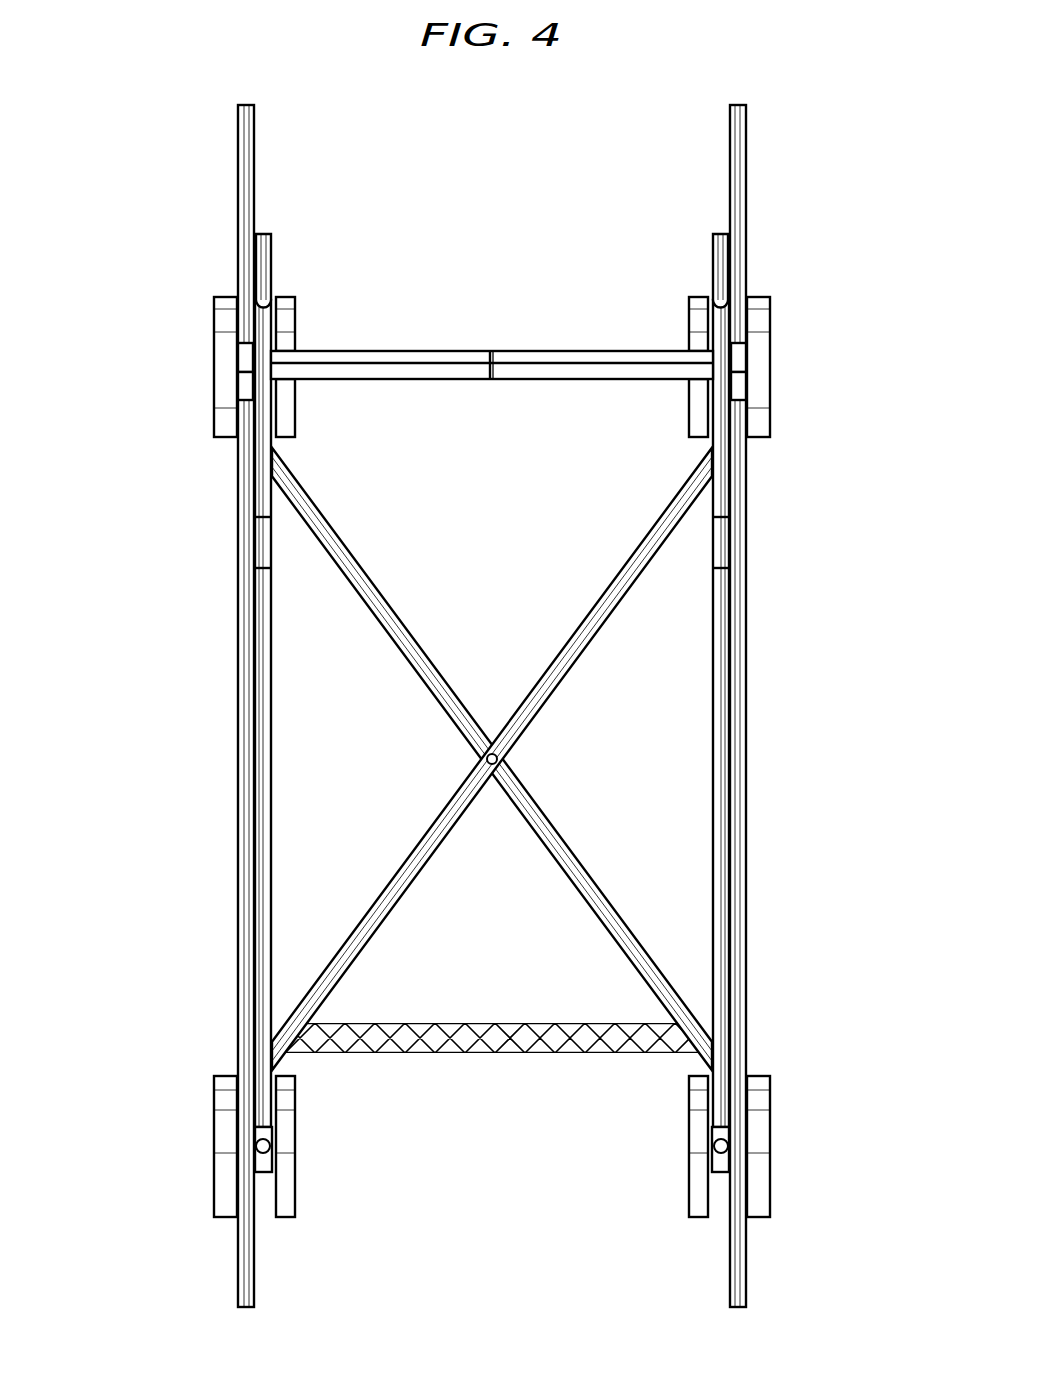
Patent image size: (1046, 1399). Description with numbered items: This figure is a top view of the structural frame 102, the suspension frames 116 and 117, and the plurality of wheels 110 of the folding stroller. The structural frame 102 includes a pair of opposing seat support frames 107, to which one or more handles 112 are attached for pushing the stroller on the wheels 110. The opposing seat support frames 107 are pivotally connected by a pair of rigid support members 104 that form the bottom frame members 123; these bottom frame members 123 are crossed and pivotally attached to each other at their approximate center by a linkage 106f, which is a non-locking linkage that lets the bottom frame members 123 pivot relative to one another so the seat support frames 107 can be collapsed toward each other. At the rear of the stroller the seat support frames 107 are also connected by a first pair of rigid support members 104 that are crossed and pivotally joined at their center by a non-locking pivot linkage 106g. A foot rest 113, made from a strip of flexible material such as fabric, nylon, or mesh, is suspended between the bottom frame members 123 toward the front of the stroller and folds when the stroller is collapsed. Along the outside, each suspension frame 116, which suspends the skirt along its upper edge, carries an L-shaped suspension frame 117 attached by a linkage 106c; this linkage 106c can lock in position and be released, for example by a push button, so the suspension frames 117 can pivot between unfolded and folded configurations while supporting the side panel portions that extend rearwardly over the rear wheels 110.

The structural frame 102 is at (491, 736).
The rigid support members 104 is at (668, 372).
The linkage 106c is at (245, 382).
The linkage 106f is at (498, 759).
The pivot linkage 106g is at (491, 350).
The seat support frames 107 is at (262, 680).
The wheels 110 is at (296, 316).
The handles 112 is at (262, 262).
The foot rest 113 is at (500, 1056).
The suspension frame 116 is at (494, 706).
The L-shaped suspension frames 117 is at (238, 126).
The bottom frame members 123 is at (345, 540).